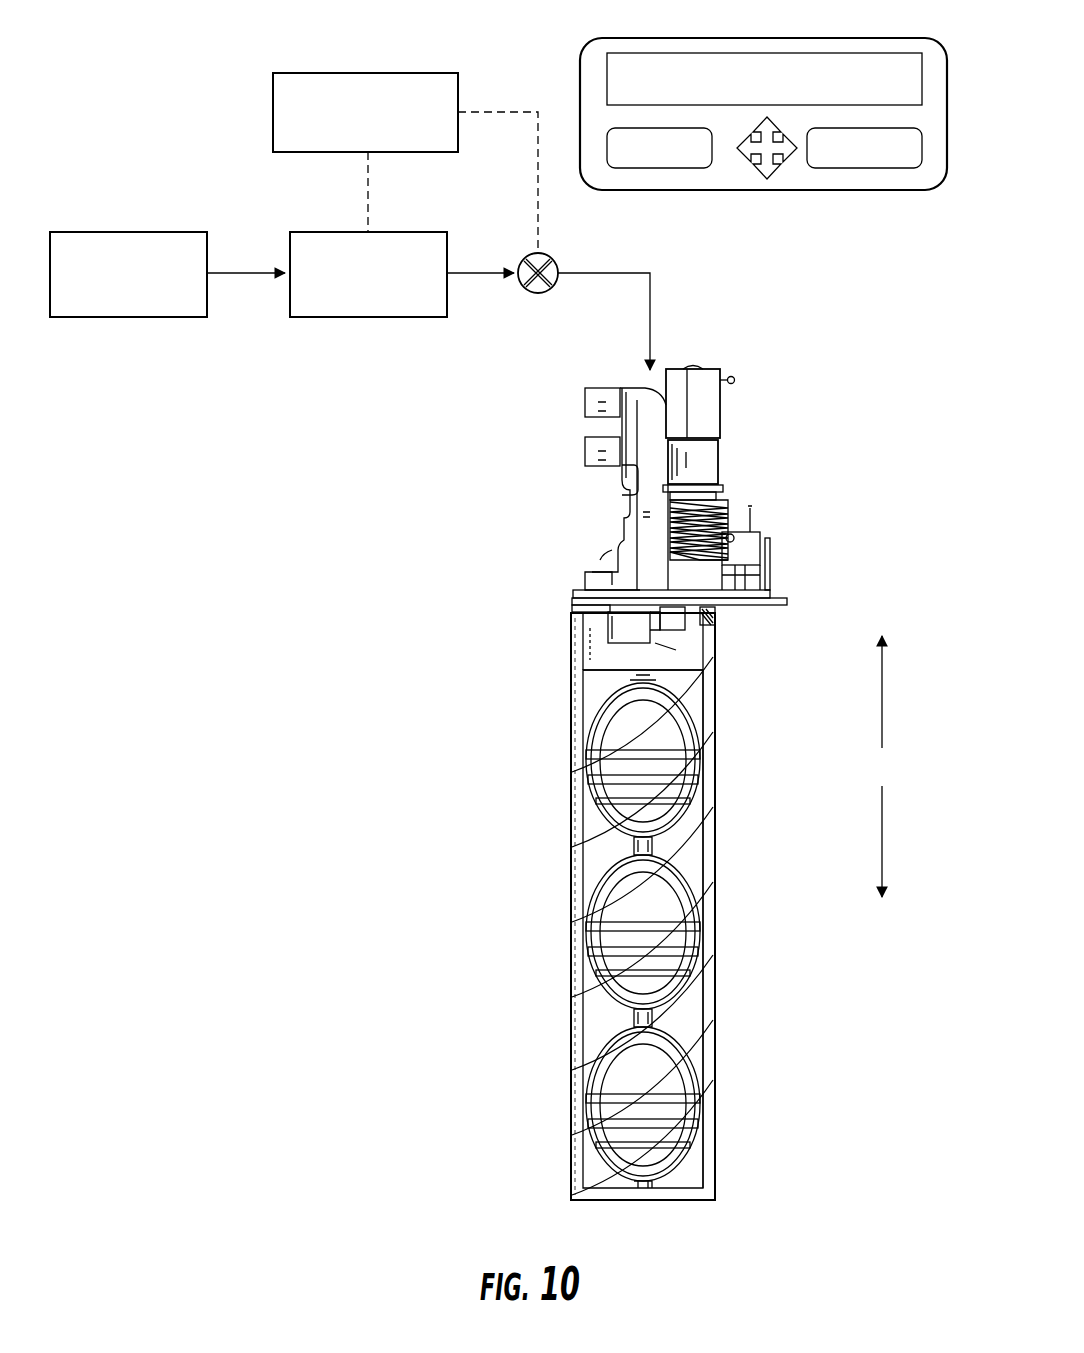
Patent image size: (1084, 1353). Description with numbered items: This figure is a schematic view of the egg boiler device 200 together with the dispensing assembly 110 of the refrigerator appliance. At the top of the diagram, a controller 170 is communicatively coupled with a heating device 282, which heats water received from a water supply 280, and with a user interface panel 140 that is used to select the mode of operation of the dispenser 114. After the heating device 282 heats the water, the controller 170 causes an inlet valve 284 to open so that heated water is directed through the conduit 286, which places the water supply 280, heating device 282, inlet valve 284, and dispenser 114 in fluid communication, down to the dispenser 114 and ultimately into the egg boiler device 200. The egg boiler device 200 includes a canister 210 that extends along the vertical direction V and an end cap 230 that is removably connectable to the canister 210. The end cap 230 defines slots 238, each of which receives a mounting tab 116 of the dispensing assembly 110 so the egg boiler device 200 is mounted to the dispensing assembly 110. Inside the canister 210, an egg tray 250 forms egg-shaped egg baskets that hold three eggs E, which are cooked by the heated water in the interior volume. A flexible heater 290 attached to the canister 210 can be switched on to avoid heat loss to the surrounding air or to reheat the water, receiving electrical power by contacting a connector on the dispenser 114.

The dispensing assembly 110 is at (368, 440).
The dispenser 114 is at (755, 465).
The mounting tab 116 is at (620, 621).
The user interface panel 140 is at (908, 38).
The controller 170 is at (445, 73).
The egg boiler device 200 is at (440, 822).
The canister 210 is at (716, 1008).
The end cap 230 is at (716, 655).
The slot 238 is at (676, 650).
The egg tray 250 is at (683, 823).
The water supply 280 is at (185, 232).
The heating device 282 is at (398, 232).
The inlet valve 284 is at (546, 256).
The conduit 286 is at (651, 304).
The flexible heater 290 is at (695, 922).
The egg E is at (622, 722).
The vertical direction V is at (884, 766).